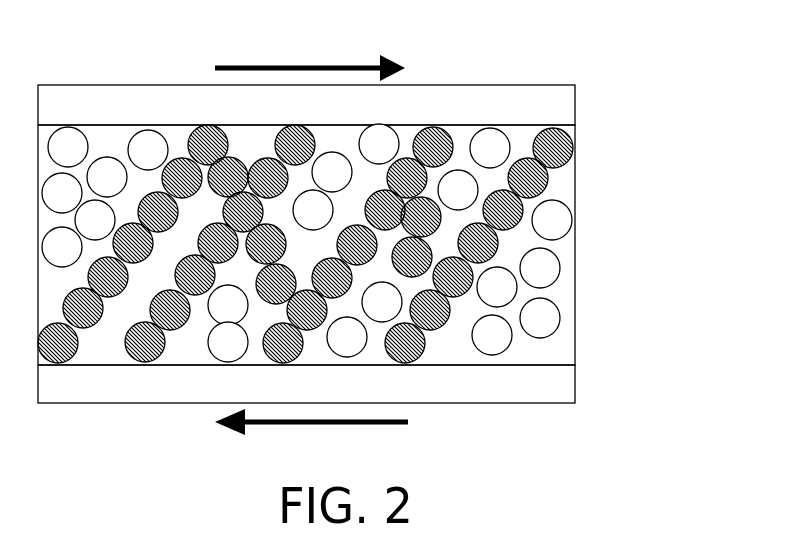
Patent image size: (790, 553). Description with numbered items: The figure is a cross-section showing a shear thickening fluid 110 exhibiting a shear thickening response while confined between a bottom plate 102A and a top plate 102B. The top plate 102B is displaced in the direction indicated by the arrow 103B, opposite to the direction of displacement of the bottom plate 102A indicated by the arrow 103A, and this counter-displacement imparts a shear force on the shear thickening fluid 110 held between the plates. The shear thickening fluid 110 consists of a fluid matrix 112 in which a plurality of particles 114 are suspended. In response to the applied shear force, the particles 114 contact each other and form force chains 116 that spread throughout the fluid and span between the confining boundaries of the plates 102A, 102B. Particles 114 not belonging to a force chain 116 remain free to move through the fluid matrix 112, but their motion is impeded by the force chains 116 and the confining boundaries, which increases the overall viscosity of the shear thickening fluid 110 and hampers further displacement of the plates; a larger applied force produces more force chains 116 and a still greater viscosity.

The shear thickening fluid 110 is at (374, 250).
The bottom plate 102A is at (575, 385).
The top plate 102B is at (575, 105).
The arrow 103A is at (318, 425).
The arrow 103B is at (318, 65).
The fluid matrix 112 is at (557, 297).
The particles 114 is at (556, 220).
The force chains 116 is at (562, 145).